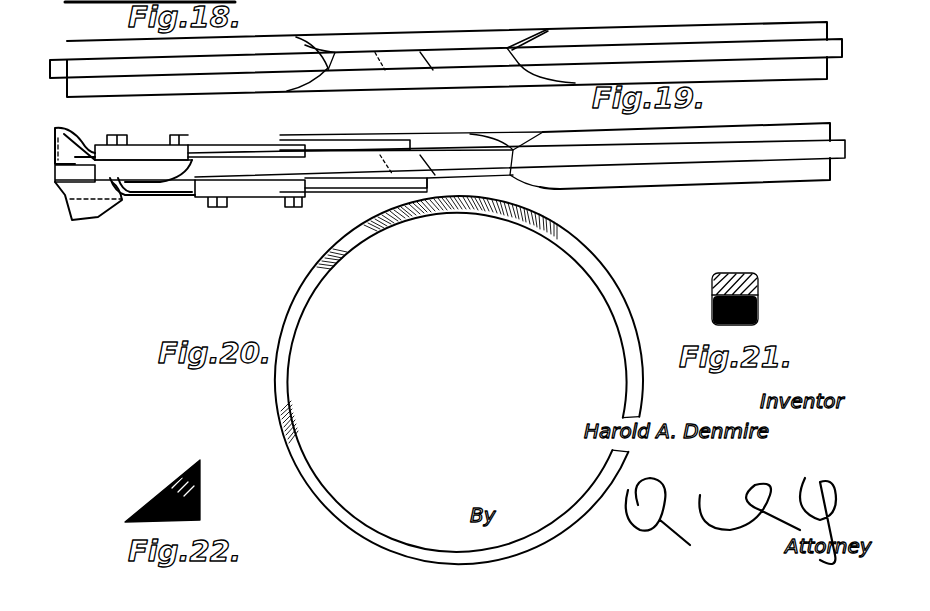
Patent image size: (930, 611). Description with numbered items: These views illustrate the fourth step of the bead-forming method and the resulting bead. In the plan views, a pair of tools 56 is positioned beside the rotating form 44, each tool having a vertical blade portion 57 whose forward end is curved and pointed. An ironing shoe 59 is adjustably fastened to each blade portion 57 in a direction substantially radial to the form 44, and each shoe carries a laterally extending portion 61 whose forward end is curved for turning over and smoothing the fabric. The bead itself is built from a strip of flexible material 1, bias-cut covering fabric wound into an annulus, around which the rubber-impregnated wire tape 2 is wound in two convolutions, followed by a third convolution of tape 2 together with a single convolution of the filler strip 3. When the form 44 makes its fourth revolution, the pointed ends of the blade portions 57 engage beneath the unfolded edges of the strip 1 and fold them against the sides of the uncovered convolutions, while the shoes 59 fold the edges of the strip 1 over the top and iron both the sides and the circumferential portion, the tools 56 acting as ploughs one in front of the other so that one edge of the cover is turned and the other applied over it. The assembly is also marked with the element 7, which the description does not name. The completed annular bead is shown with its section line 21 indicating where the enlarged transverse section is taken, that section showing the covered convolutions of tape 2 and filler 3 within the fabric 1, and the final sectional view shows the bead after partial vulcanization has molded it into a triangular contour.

In FIG. 21, the strip of flexible material 1 is at (735, 274).
In FIG. 22, the strip of flexible material 1 is at (201, 481).
In FIG. 21, the wire tape 2 is at (760, 306).
In FIG. 22, the wire tape 2 is at (201, 508).
In FIG. 18, the filler strip 3 is at (267, 69).
In FIG. 19, the filler strip 3 is at (516, 158).
In FIG. 21, the filler strip 3 is at (760, 284).
In FIG. 22, the filler strip 3 is at (184, 478).
In FIG. 18, the tube 7 is at (262, 38).
In FIG. 19, the tube 7 is at (563, 131).
In FIG. 20, the split ring 21 is at (590, 318).
In FIG. 19, the form 44 is at (477, 129).
In FIG. 19, the tool 56 is at (80, 135).
In FIG. 19, the blade portion 57 is at (360, 135).
In FIG. 19, the ironing shoe 59 is at (152, 144).
In FIG. 19, the laterally extending portion 61 is at (231, 163).